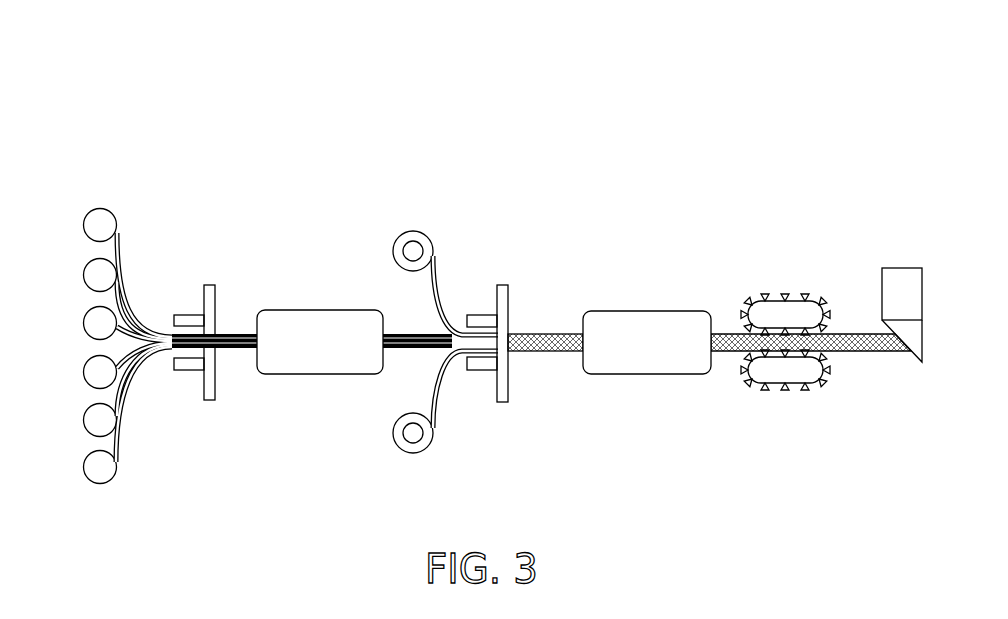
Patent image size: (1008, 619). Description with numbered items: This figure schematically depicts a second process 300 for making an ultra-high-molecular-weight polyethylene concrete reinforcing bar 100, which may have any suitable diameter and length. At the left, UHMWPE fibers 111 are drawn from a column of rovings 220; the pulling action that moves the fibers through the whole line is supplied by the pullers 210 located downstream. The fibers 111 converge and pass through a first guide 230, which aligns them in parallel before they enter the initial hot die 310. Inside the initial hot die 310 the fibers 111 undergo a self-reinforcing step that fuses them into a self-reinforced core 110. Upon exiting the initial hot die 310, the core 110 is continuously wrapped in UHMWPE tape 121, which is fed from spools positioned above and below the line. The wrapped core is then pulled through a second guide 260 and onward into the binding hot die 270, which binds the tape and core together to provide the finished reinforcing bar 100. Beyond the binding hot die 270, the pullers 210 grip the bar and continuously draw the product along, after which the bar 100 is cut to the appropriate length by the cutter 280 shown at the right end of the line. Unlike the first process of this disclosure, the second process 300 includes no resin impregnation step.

The second process 300 is at (464, 258).
The rovings 220 is at (86, 226).
The UHMWPE fibers 111 is at (122, 256).
The first guide 230 is at (188, 385).
The initial hot die 310 is at (298, 356).
The self-reinforced core 110 is at (432, 337).
The UHMWPE tape 121 is at (437, 275).
The second guide 260 is at (502, 418).
The binding hot die 270 is at (625, 356).
The pullers 210 is at (747, 303).
The take-up / cutting unit 280 is at (873, 264).
The reinforcing bar 100 is at (868, 375).